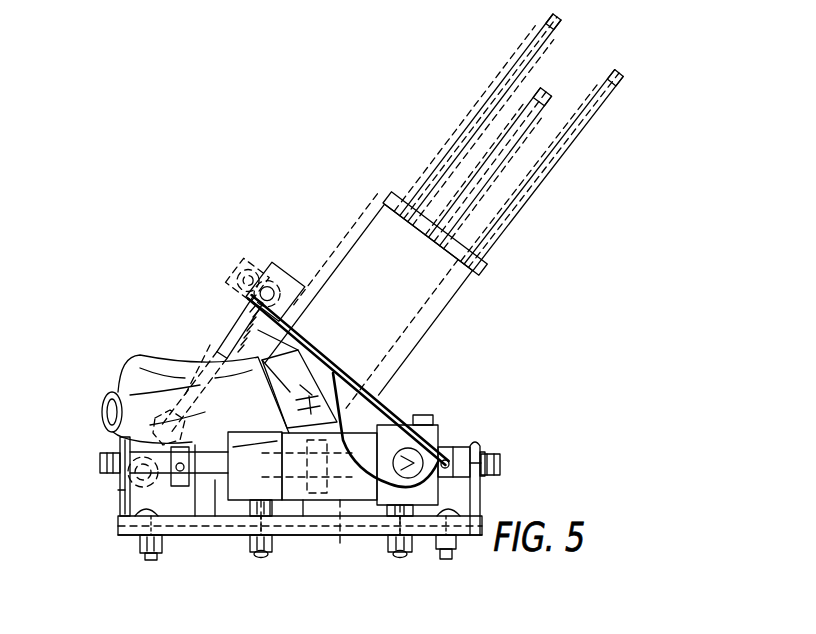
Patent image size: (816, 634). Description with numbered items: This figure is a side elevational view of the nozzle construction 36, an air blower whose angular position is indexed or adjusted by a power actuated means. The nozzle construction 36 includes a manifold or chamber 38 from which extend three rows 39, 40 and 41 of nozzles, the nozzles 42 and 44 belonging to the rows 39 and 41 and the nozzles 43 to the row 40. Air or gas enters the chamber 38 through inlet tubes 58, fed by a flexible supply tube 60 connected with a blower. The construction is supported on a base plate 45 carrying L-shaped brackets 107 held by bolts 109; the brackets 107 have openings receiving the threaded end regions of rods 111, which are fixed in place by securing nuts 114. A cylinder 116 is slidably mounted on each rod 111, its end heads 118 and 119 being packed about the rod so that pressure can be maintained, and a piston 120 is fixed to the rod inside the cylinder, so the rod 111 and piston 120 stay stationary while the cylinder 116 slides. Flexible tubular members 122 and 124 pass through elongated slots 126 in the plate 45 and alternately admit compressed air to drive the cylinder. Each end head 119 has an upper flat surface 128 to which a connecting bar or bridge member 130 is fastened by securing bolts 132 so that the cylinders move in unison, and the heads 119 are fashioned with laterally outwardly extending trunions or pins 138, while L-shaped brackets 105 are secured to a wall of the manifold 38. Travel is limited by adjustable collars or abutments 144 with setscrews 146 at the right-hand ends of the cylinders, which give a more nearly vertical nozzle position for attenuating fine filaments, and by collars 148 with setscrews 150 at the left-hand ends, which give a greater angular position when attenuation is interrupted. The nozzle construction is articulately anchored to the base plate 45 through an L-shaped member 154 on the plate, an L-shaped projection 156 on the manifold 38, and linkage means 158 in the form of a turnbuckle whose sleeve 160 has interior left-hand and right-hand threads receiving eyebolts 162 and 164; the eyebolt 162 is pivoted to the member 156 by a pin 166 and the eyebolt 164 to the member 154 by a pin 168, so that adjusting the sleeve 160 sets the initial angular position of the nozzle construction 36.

The nozzle construction 36 is at (385, 186).
The manifold or chamber 38 is at (463, 297).
The row of nozzles 39 is at (562, 14).
The row of nozzles 40 is at (566, 84).
The row of nozzles 41 is at (627, 60).
The nozzles 42 is at (487, 97).
The nozzles 43 is at (552, 97).
The nozzles 44 is at (563, 158).
The base plate 45 is at (470, 540).
The air or gas inlet tubes 58 is at (242, 312).
The flexible air or gas supply tube 60 is at (148, 356).
The L-shaped brackets 105 is at (393, 403).
The L-shaped brackets 107 is at (119, 513).
The bolts 109 is at (153, 560).
The rods 111 is at (216, 516).
The securing nuts 114 is at (101, 470).
The cylinder 116 is at (300, 505).
The end head 118 is at (263, 397).
The end head 119 is at (381, 518).
The piston 120 is at (340, 558).
The tubular member 122 is at (255, 553).
The tubular member 124 is at (432, 552).
The elongated slots 126 is at (278, 535).
The upper flat surface 128 is at (438, 429).
The connecting bar or bridge member 130 is at (448, 423).
The securing bolts 132 is at (425, 414).
The trunions or pins 138 is at (462, 447).
The adjustable collars or abutments 144 is at (490, 450).
The setscrews 146 is at (480, 460).
The adjustable collars or abutments 148 is at (196, 447).
The setscrews 150 is at (203, 470).
The L-shaped member 154 is at (118, 503).
The L-shaped member or projection 156 is at (275, 289).
The linkage means 158 is at (205, 340).
The tubular rod or sleeve 160 is at (224, 330).
The eyebolt 162 is at (250, 274).
The eyebolt 164 is at (181, 418).
The pin 166 is at (273, 276).
The pin 168 is at (135, 485).